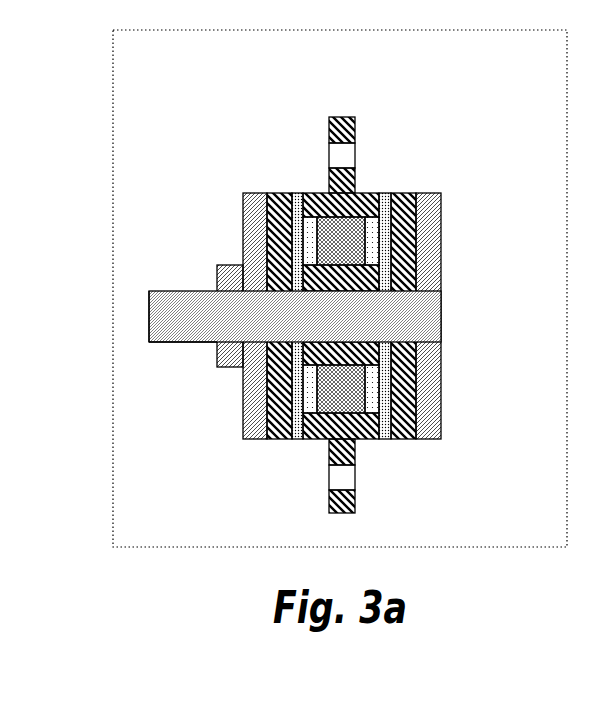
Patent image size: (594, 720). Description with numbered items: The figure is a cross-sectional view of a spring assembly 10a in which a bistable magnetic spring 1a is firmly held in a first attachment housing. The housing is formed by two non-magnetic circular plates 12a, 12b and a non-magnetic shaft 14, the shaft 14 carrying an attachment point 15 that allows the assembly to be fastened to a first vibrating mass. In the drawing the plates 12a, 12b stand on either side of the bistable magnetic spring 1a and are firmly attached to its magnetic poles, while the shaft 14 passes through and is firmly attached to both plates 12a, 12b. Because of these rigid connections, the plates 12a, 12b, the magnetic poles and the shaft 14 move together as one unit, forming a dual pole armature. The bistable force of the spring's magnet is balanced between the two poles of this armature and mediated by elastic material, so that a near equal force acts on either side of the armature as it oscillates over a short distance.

The bistable magnetic spring 1a is at (341, 116).
The spring assembly 10a is at (111, 289).
The non-magnetic circular plate 12a is at (247, 217).
The non-magnetic circular plate 12b is at (425, 215).
The non-magnetic shaft 14 is at (425, 318).
The attachment point 15 is at (155, 343).